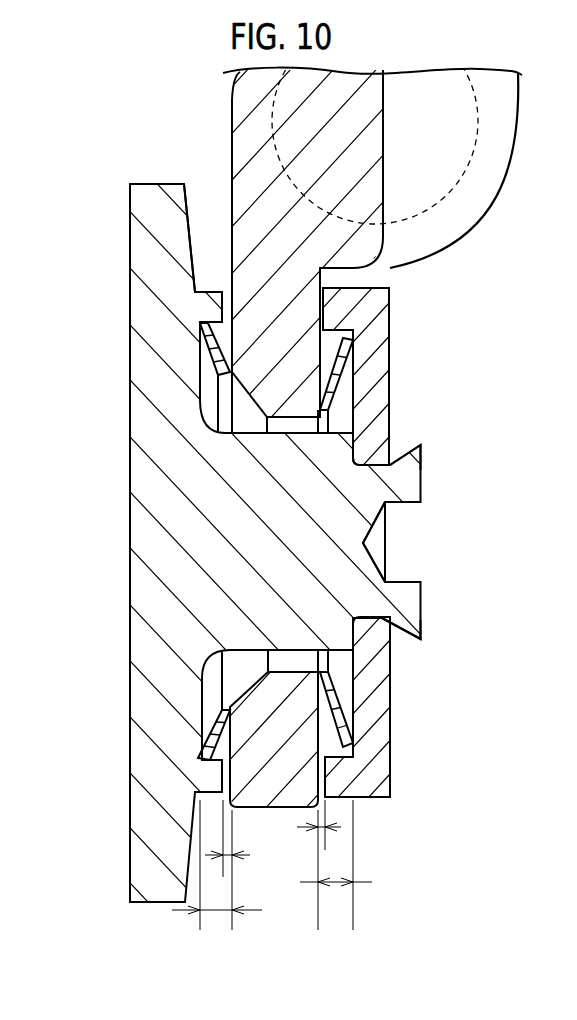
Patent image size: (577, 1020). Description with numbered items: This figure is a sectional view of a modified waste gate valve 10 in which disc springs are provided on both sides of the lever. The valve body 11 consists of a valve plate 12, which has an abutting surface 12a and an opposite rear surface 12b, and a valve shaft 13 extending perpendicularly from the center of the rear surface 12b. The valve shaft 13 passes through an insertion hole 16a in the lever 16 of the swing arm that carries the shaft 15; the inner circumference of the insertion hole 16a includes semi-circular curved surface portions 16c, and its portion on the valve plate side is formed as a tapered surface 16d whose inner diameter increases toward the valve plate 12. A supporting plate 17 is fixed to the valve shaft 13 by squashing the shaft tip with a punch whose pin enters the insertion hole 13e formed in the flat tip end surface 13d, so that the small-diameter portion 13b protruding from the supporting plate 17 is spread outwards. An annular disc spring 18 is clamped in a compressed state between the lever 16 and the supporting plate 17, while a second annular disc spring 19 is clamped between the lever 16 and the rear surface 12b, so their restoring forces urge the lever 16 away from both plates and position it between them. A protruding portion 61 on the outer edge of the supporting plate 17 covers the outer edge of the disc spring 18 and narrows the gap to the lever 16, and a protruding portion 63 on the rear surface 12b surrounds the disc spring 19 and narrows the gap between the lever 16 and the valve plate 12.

The waste gate valve 10 is at (87, 125).
The valve body 11 is at (78, 360).
The valve plate 12 is at (142, 367).
The valve shaft 13 is at (253, 533).
The abutting surface 12a is at (128, 252).
The rear surface 12b is at (187, 207).
The protruding portion 63 is at (217, 290).
The shaft 15 is at (462, 192).
The supporting plate 17 is at (380, 303).
The lever 16 is at (313, 352).
The disc spring 18 is at (335, 398).
The tip end surface 13d is at (415, 445).
The insertion hole 13e is at (395, 582).
The small-diameter portion 13b is at (400, 640).
The insertion hole 16a is at (320, 660).
The curved surface portion 16c is at (300, 662).
The tapered surface 16d is at (240, 688).
The disc spring 19 is at (210, 722).
The protruding portion 61 is at (340, 800).